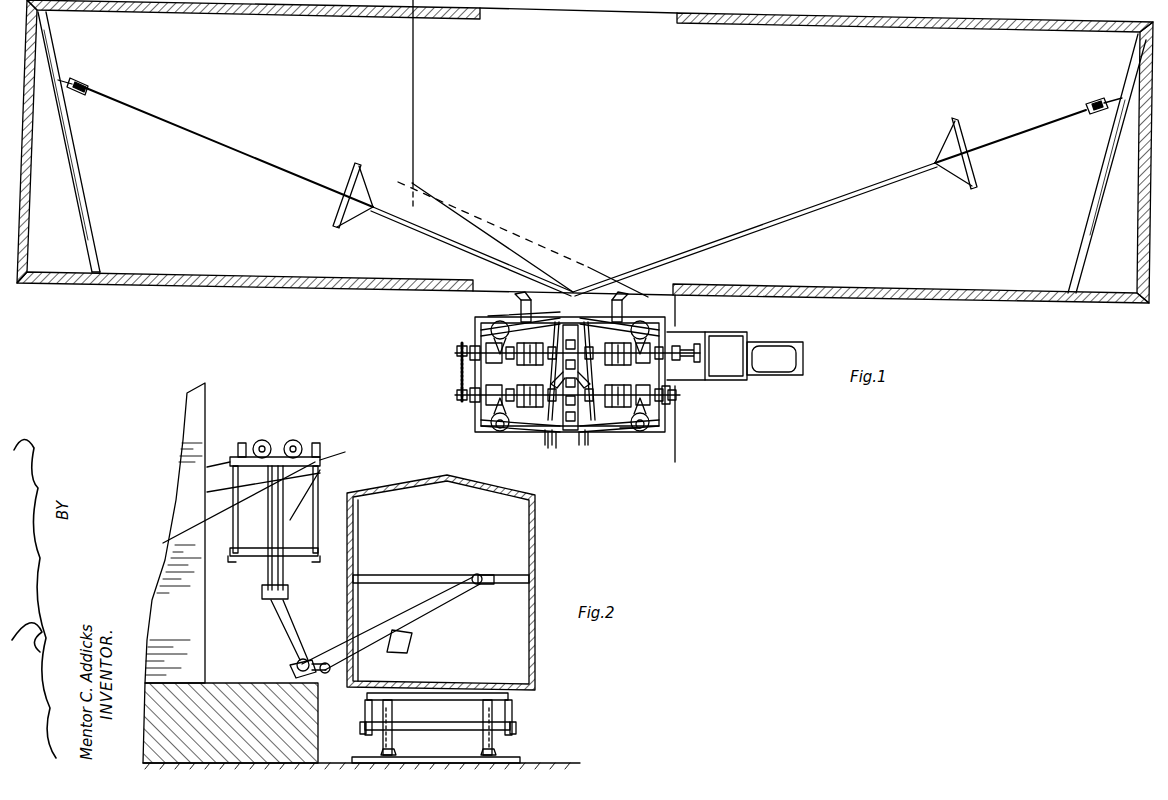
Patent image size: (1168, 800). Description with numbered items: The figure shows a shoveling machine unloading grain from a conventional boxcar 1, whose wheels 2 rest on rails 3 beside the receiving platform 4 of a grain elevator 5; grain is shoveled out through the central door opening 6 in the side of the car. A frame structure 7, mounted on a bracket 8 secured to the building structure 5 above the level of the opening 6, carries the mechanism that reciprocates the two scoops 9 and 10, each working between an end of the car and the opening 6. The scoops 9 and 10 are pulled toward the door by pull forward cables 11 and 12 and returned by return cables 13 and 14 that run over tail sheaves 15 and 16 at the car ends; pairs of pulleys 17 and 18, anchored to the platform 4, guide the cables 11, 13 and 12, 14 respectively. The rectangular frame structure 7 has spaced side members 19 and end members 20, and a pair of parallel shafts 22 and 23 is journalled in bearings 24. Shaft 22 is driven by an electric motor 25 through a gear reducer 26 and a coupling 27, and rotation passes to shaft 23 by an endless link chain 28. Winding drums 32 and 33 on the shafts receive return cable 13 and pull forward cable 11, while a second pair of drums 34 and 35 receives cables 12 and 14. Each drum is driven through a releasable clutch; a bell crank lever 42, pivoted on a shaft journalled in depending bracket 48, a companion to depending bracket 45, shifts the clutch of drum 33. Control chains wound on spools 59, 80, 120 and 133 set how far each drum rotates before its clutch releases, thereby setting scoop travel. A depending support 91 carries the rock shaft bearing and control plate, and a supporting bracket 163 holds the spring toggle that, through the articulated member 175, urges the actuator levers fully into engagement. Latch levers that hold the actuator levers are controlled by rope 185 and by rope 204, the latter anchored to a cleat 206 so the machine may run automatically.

In FIG. 1, the boxcar 1 is at (236, 16).
In FIG. 2, the boxcar 1 is at (538, 535).
In FIG. 1, the wheels 2 is at (662, 467).
In FIG. 2, the wheels 2 is at (392, 720).
In FIG. 2, the rails 3 is at (394, 756).
In FIG. 2, the receiving platform 4 is at (255, 682).
In FIG. 2, the grain elevator 5 is at (180, 517).
In FIG. 1, the opening 6 is at (486, 285).
In FIG. 2, the opening 6 is at (356, 540).
In FIG. 1, the frame structure 7 is at (600, 432).
In FIG. 2, the frame structure 7 is at (318, 458).
In FIG. 2, the bracket 8 is at (214, 465).
In FIG. 1, the scoop 9 is at (362, 170).
In FIG. 2, the scoop 9 is at (414, 640).
In FIG. 1, the scoop 10 is at (955, 178).
In FIG. 1, the pull forward cable 11 is at (534, 266).
In FIG. 2, the pull forward cable 11 is at (373, 658).
In FIG. 1, the pull forward cable 12 is at (645, 260).
In FIG. 1, the return cable 13 is at (425, 247).
In FIG. 2, the return cable 13 is at (442, 604).
In FIG. 1, the return cable 14 is at (685, 255).
In FIG. 1, the tail sheave 15 is at (95, 86).
In FIG. 2, the tail sheave 15 is at (479, 572).
In FIG. 1, the tail sheave 16 is at (1085, 102).
In FIG. 1, the pulleys 17 is at (632, 304).
In FIG. 2, the pulleys 17 is at (298, 660).
In FIG. 1, the pulleys 18 is at (518, 305).
In FIG. 1, the side members 19 is at (540, 428).
In FIG. 1, the end members 20 is at (478, 330).
In FIG. 2, the end members 20 is at (245, 468).
In FIG. 1, the shaft 22 is at (468, 353).
In FIG. 1, the shaft 23 is at (468, 395).
In FIG. 1, the bearings 24 is at (672, 395).
In FIG. 1, the electric motor 25 is at (778, 362).
In FIG. 1, the gear reducer 26 is at (730, 345).
In FIG. 1, the coupling 27 is at (700, 338).
In FIG. 1, the link chain 28 is at (460, 370).
In FIG. 1, the winding drum 32 is at (607, 340).
In FIG. 2, the winding drum 32 is at (296, 440).
In FIG. 1, the winding drum 33 is at (626, 384).
In FIG. 2, the winding drum 33 is at (265, 440).
In FIG. 1, the winding drum 34 is at (545, 340).
In FIG. 1, the winding drum 35 is at (520, 385).
In FIG. 1, the bell crank lever 42 is at (623, 430).
In FIG. 2, the depending bracket 45 is at (322, 480).
In FIG. 2, the depending bracket 48 is at (233, 530).
In FIG. 2, the spool 59 is at (318, 443).
In FIG. 1, the spool 80 is at (645, 430).
In FIG. 2, the spool 80 is at (241, 443).
In FIG. 2, the depending support 91 is at (257, 583).
In FIG. 1, the spool 120 is at (486, 314).
In FIG. 1, the spool 133 is at (495, 432).
In FIG. 1, the supporting bracket 163 is at (556, 448).
In FIG. 1, the articulated member 175 is at (546, 448).
In FIG. 1, the rope 185 is at (579, 445).
In FIG. 2, the rope 185 is at (216, 507).
In FIG. 2, the rope 204 is at (344, 447).
In FIG. 2, the cleat 206 is at (355, 540).